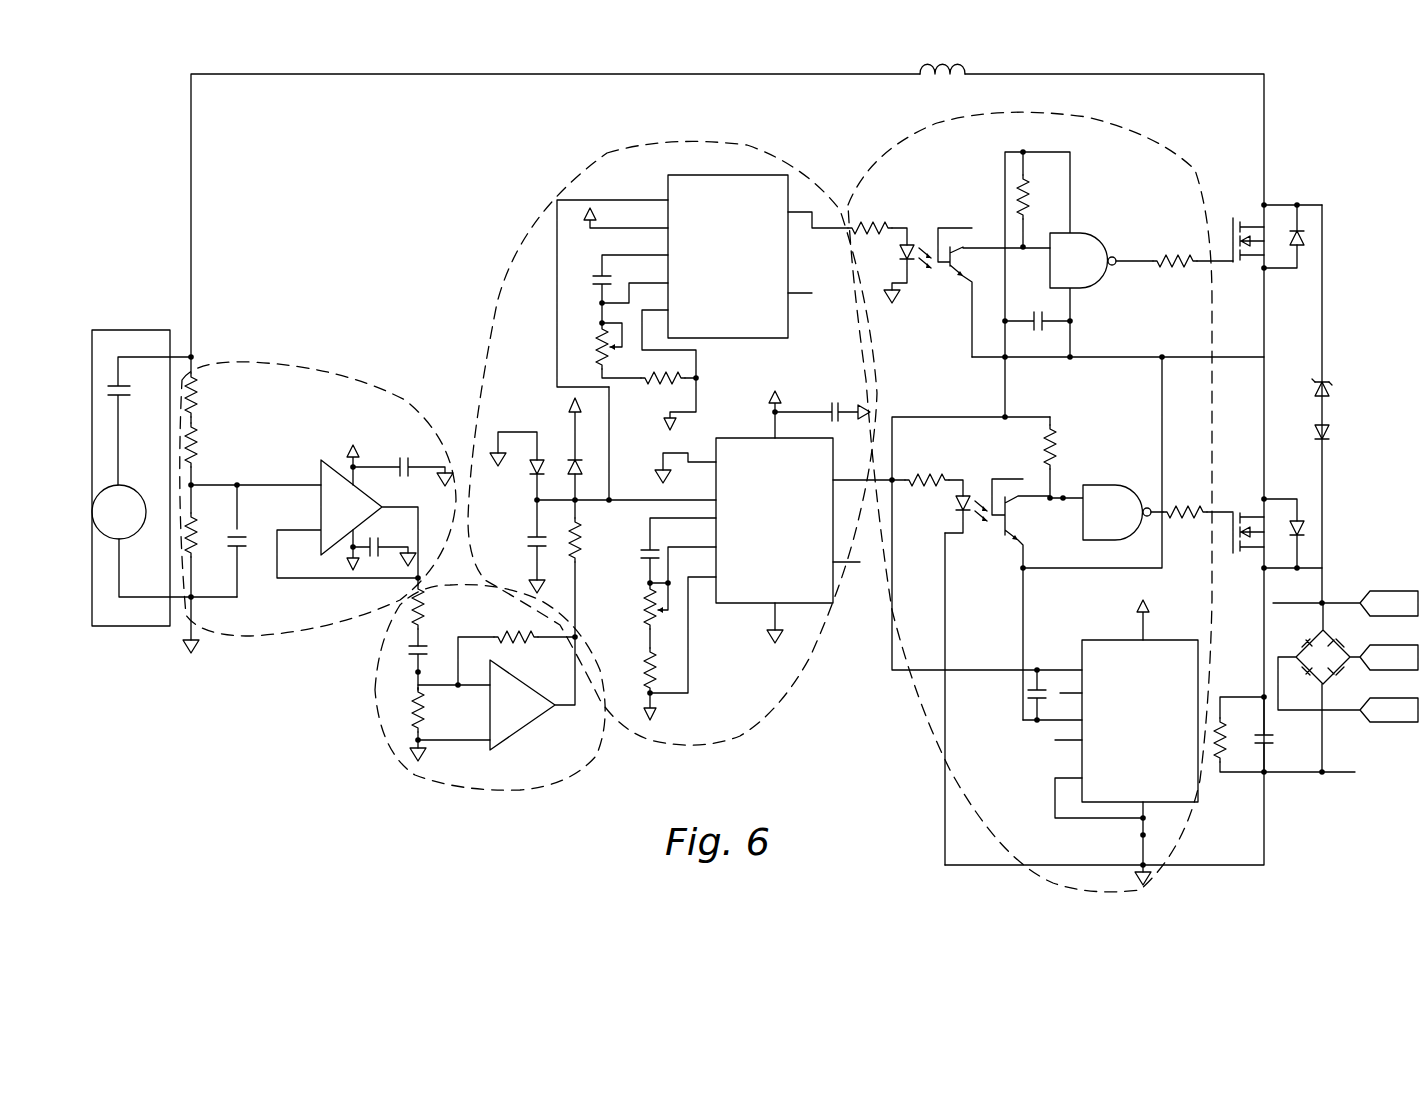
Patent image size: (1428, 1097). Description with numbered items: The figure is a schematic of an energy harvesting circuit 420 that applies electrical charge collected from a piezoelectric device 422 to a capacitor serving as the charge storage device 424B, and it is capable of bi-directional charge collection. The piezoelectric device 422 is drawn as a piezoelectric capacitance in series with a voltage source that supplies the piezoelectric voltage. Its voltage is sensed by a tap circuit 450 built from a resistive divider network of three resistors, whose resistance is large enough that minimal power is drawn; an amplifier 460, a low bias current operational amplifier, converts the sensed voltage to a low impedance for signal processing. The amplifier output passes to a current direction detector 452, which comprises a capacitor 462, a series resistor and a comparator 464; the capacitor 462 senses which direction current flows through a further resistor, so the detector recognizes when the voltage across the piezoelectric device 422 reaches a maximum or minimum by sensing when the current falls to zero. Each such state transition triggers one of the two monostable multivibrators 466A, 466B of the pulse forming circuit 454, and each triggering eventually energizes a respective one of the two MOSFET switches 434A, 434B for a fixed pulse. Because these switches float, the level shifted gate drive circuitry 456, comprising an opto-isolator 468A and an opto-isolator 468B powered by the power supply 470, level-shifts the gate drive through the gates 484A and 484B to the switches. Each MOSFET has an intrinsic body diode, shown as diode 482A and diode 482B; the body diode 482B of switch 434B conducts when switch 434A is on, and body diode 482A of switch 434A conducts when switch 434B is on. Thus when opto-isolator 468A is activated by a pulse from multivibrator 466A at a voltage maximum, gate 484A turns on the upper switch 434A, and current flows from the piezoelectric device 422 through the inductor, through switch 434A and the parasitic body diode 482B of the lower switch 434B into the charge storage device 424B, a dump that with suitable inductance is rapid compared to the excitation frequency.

The energy harvesting circuit 420 is at (1278, 100).
The piezoelectric device 422 is at (145, 329).
The tap circuit 450 is at (308, 372).
The amplifier 460 is at (336, 464).
The capacitor 462 is at (400, 656).
The current direction detector 452 is at (373, 722).
The comparator 464 is at (522, 732).
The pulse forming circuit 454 is at (515, 256).
The monostable multivibrator 466A is at (745, 166).
The monostable multivibrator 466B is at (753, 421).
The level shifted gate drive circuitry 456 is at (917, 717).
The opto-isolator 468A is at (925, 205).
The opto-isolator 468B is at (980, 540).
The gate 484A is at (1098, 282).
The gate 484B is at (1103, 485).
The switch 434A is at (1245, 212).
The switch 434B is at (1243, 562).
The intrinsic body diode 482A is at (1304, 235).
The intrinsic body diode 482B is at (1310, 530).
The power supply 470 is at (1082, 752).
The charge storage device 424B is at (1294, 744).